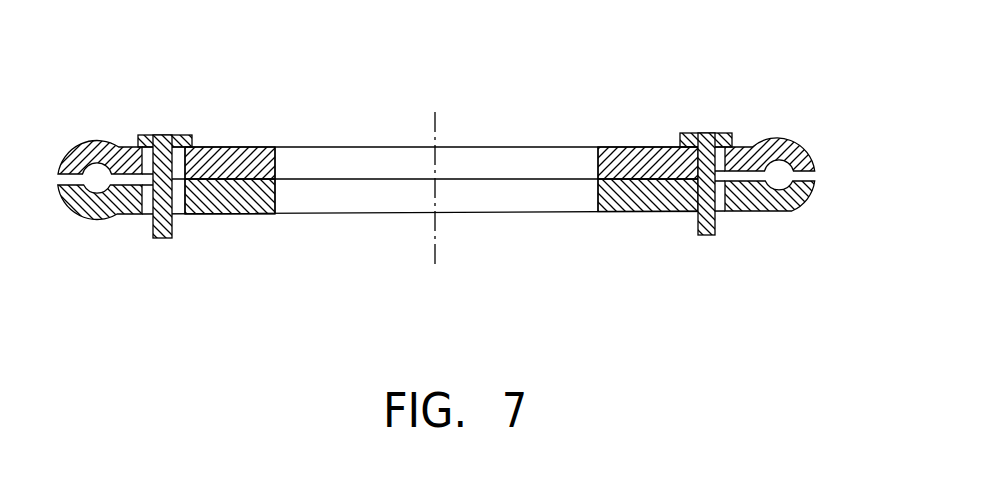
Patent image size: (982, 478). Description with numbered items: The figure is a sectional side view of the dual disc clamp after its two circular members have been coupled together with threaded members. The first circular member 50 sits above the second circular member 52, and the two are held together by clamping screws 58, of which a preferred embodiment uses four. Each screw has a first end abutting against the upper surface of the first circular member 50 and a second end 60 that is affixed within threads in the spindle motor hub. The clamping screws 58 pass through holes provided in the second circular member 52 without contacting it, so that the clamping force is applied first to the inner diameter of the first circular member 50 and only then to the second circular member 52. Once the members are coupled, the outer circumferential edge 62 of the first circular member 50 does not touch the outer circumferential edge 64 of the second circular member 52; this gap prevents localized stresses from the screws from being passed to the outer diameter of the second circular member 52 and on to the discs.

The first circular member 50 is at (242, 140).
The second circular member 52 is at (233, 235).
The clamping screw 58 is at (173, 120).
The second end of screw 60 is at (135, 235).
The outer circumferential edge of first circular member 62 is at (808, 128).
The outer circumferential edge of second circular member 64 is at (807, 223).